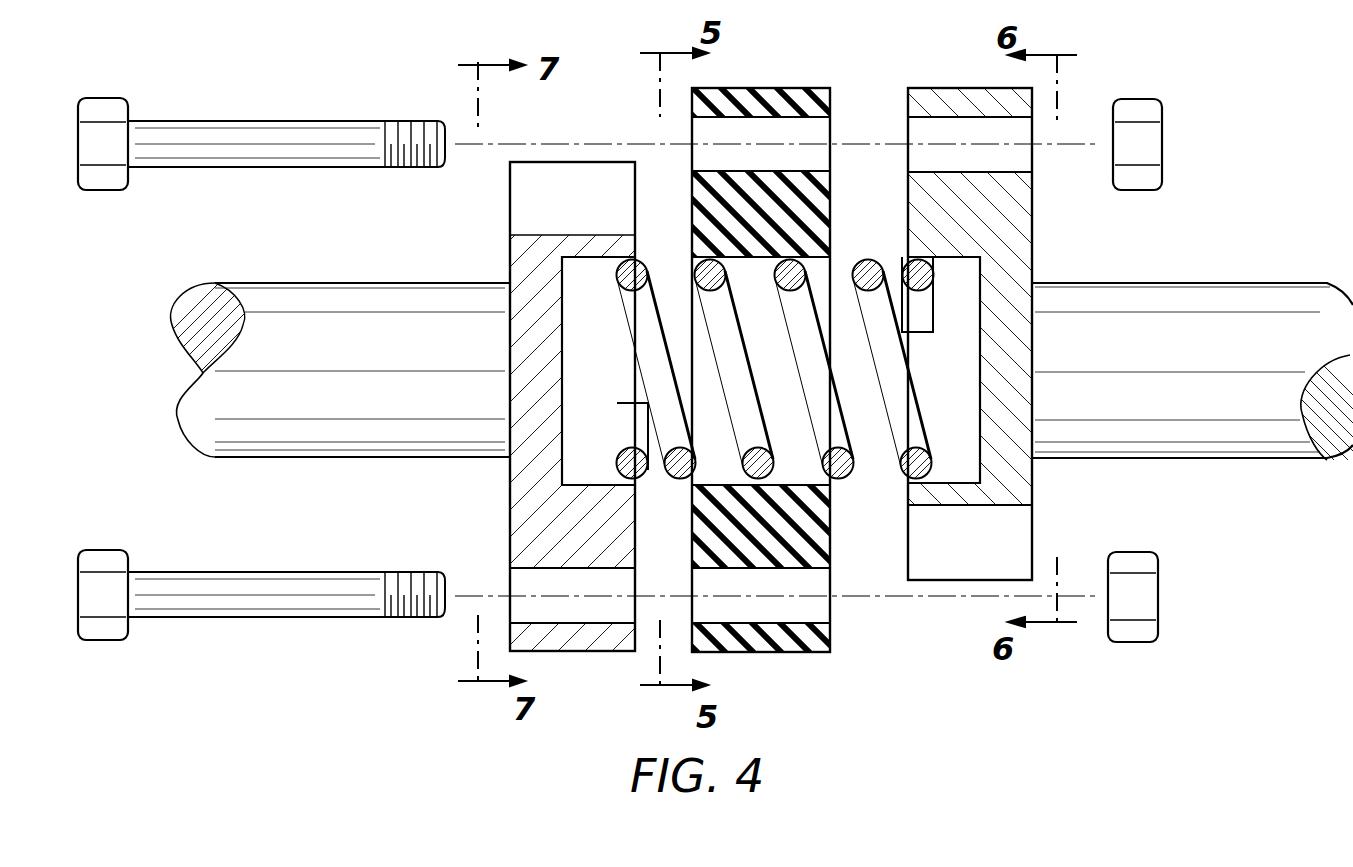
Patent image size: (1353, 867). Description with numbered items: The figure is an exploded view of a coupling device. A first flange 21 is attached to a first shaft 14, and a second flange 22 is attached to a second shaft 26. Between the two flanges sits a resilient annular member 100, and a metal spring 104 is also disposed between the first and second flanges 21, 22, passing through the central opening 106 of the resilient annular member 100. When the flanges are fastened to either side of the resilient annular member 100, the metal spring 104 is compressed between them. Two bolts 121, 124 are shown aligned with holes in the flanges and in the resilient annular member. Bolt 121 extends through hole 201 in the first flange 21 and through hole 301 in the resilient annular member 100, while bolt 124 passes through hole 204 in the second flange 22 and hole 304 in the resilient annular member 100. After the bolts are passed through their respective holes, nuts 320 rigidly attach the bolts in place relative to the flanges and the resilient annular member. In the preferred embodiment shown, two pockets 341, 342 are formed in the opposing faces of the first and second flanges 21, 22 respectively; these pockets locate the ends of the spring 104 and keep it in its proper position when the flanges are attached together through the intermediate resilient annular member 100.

The first shaft 14 is at (1185, 459).
The first flange 21 is at (947, 88).
The second flange 22 is at (588, 652).
The second shaft 26 is at (297, 283).
The resilient annular member 100 is at (790, 655).
The metal spring 104 is at (872, 260).
The central opening 106 is at (807, 466).
The bolt 121 is at (287, 168).
The bolt 124 is at (205, 618).
The hole 201 is at (915, 130).
The hole 204 is at (525, 583).
The hole 301 is at (710, 157).
The hole 304 is at (813, 608).
The nut 320 is at (1165, 136).
The pocket 341 is at (967, 275).
The pocket 342 is at (580, 452).